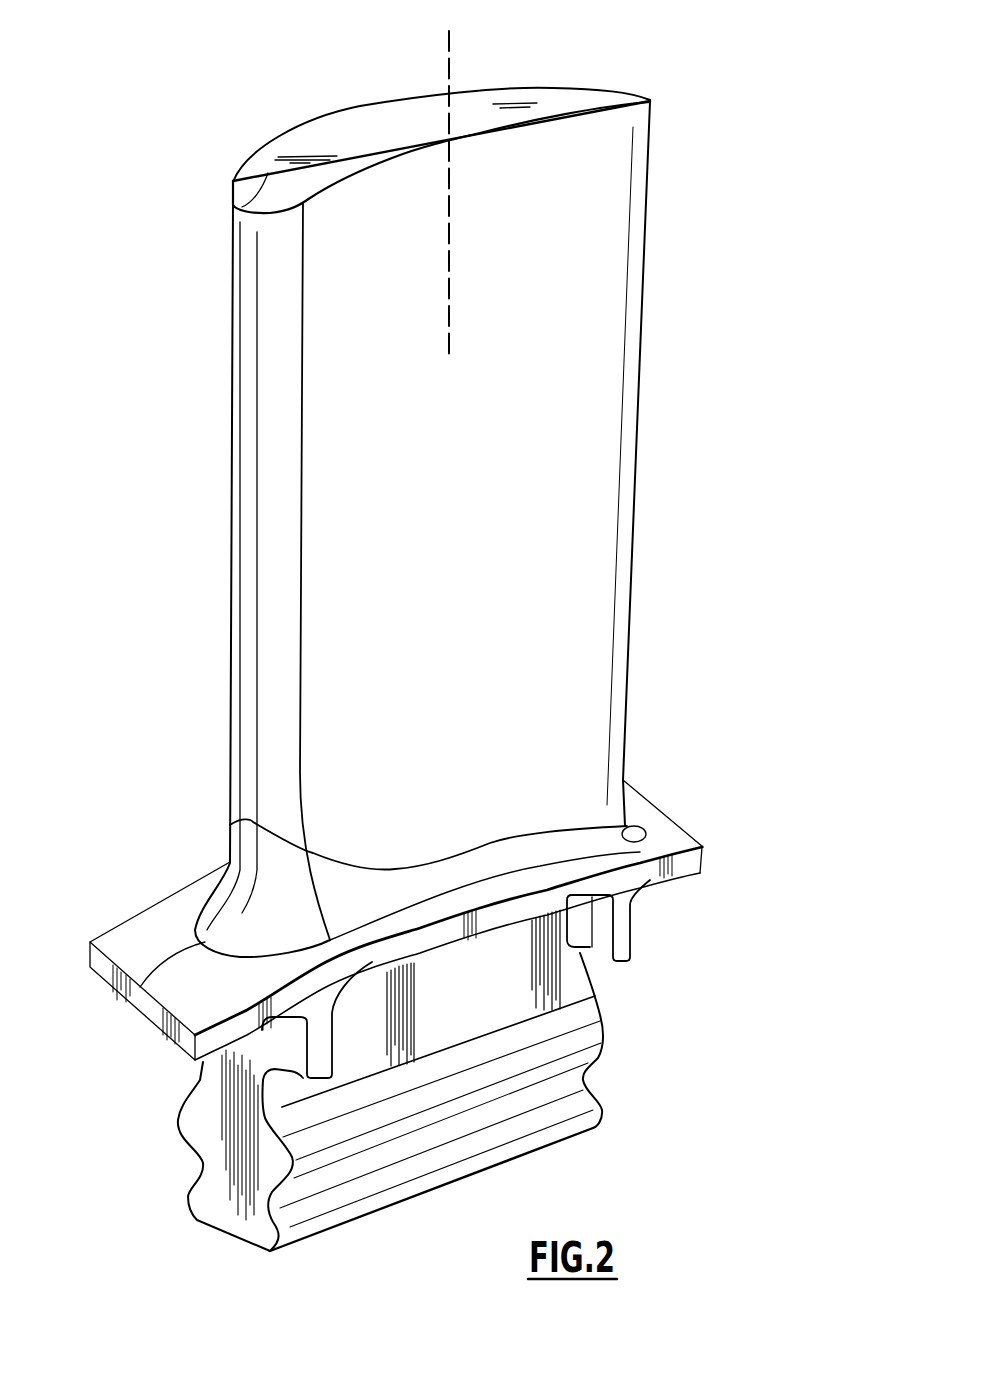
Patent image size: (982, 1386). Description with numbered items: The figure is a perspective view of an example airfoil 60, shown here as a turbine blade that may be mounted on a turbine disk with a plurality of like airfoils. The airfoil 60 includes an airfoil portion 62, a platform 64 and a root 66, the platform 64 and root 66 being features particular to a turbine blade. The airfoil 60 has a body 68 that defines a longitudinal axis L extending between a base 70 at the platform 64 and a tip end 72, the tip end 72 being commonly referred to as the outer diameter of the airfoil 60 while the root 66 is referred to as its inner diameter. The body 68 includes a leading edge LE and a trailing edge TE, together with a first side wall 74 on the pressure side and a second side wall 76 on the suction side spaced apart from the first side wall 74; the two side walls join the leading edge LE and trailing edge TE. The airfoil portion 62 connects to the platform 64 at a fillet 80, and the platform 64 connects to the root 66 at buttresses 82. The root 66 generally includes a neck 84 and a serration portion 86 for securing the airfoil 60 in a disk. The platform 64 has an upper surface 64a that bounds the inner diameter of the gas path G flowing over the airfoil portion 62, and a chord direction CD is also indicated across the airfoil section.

The airfoil 60 is at (106, 699).
The airfoil portion 62 is at (622, 433).
The platform 64 is at (685, 825).
The upper surface 64a is at (642, 812).
The root 66 is at (575, 1009).
The body 68 is at (593, 700).
The base 70 is at (157, 998).
The tip end 72 is at (320, 140).
The first side wall 74 is at (613, 138).
The second side wall 76 is at (545, 87).
The fillet 80 is at (247, 868).
The buttresses 82 is at (625, 933).
The neck 84 is at (517, 950).
The fir tree serrations 86 is at (297, 1188).
The longitudinal axis L is at (449, 261).
The chord direction CD is at (240, 196).
The leading edge LE is at (218, 292).
The trailing edge TE is at (660, 258).
The gas path G is at (188, 758).